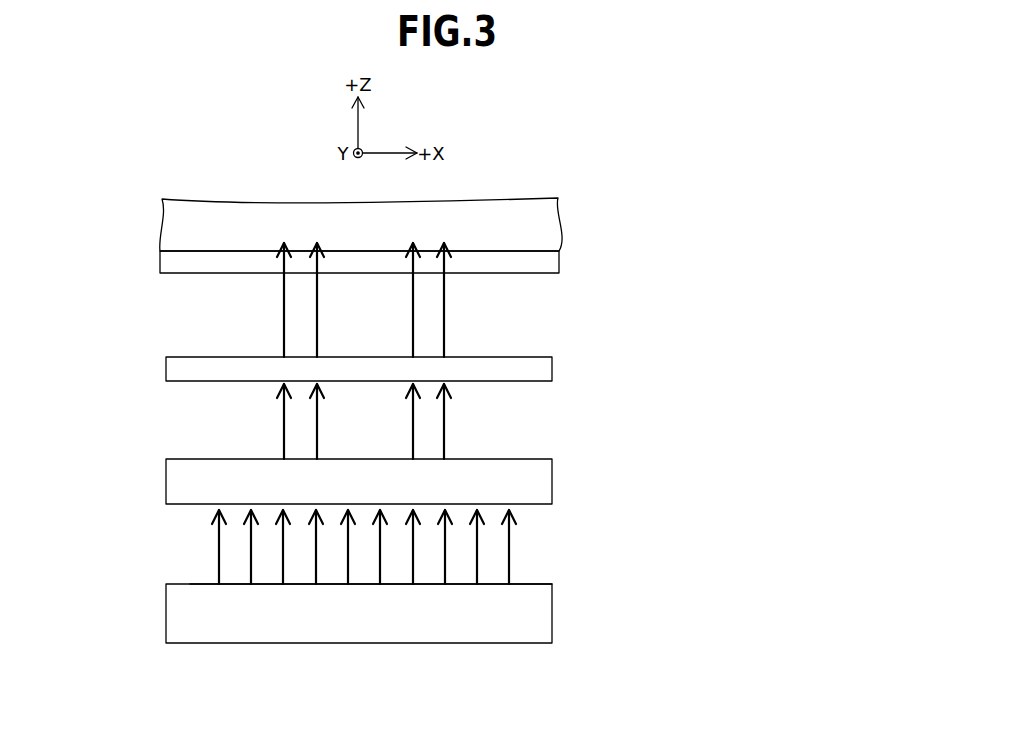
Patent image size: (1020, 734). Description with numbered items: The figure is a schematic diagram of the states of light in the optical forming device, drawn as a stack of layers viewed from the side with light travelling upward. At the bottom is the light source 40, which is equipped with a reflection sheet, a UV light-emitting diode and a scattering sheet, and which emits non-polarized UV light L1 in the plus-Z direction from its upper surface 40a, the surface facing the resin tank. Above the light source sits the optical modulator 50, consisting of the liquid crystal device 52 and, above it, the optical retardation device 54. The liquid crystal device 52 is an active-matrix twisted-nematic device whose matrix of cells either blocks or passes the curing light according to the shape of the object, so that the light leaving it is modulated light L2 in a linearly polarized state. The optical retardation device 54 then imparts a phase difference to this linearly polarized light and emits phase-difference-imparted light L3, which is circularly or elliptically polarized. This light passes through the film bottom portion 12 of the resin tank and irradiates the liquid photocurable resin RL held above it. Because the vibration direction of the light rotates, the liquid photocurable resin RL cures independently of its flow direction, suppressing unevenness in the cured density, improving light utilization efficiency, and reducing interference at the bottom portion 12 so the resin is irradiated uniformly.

The bottom portion 12 is at (160, 257).
The light source 40 is at (166, 608).
The upper surface 40a is at (190, 584).
The optical modulator 50 is at (445, 429).
The liquid crystal device 52 is at (324, 481).
The optical retardation device 54 is at (166, 365).
The liquid photocurable resin RL is at (202, 209).
The non-polarized UV light L1 is at (511, 556).
The modulated light L2 is at (446, 428).
The phase-difference-imparted light L3 is at (446, 312).